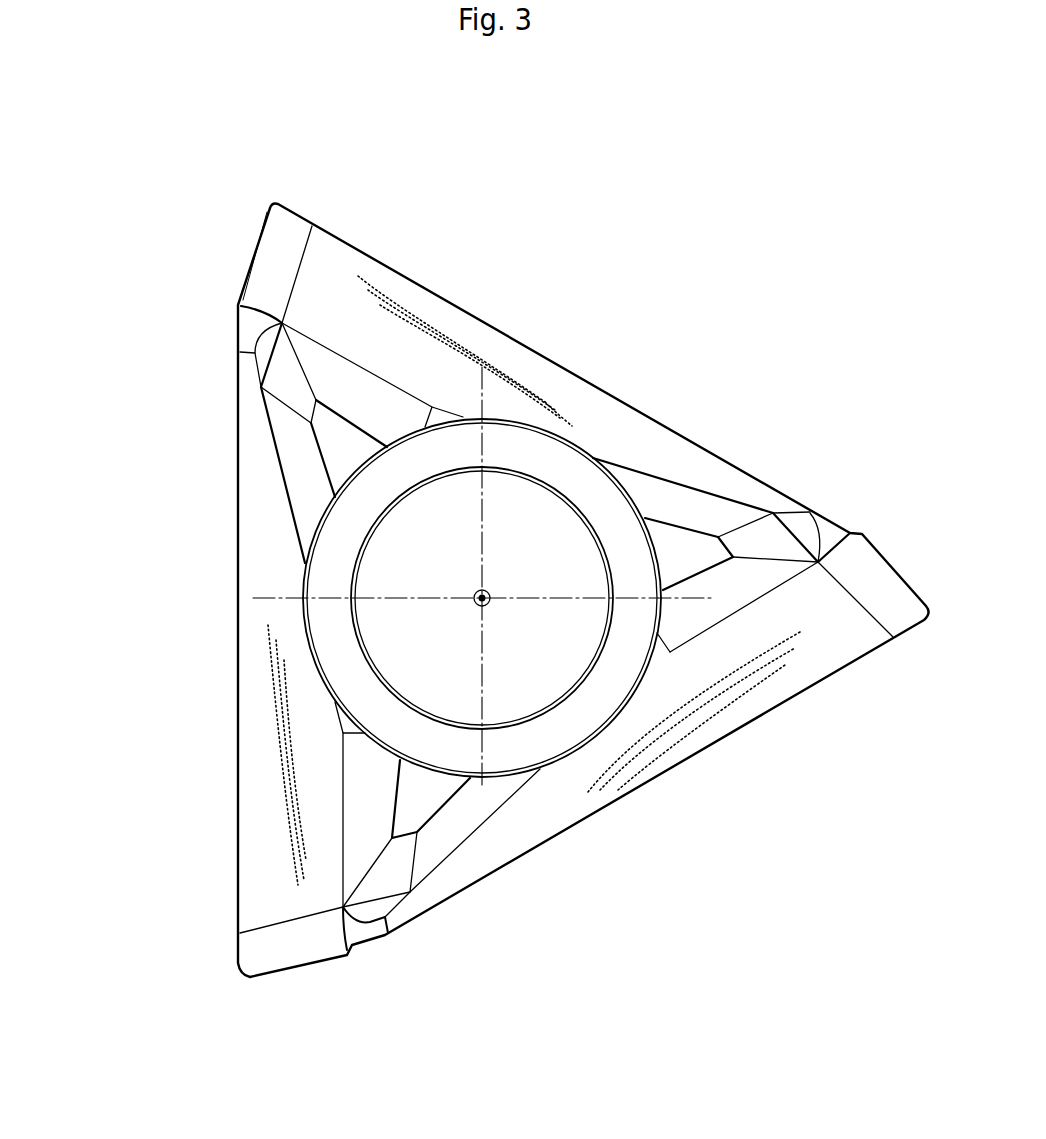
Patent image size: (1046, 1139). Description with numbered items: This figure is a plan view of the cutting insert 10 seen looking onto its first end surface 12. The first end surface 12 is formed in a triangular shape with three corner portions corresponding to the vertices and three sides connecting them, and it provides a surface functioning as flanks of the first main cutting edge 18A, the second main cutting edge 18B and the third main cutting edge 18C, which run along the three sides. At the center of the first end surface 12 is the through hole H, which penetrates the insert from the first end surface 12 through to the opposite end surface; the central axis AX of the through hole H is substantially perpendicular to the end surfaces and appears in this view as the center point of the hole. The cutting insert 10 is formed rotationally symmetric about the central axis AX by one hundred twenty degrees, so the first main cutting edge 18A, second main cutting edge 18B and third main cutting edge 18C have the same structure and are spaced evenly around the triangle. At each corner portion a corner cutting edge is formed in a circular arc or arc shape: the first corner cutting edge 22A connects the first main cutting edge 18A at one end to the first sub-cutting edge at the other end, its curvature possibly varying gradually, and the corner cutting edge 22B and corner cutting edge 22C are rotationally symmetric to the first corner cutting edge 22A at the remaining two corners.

The cutting insert 10 is at (462, 916).
The first end surface 12 is at (657, 452).
The first main cutting edge 18A is at (237, 641).
The second main cutting edge 18B is at (447, 293).
The third main cutting edge 18C is at (585, 823).
The first corner cutting edge 22A is at (237, 960).
The corner cutting edge 22B is at (297, 212).
The corner cutting edge 22C is at (913, 633).
The central axis AX is at (486, 590).
The through hole H is at (399, 554).